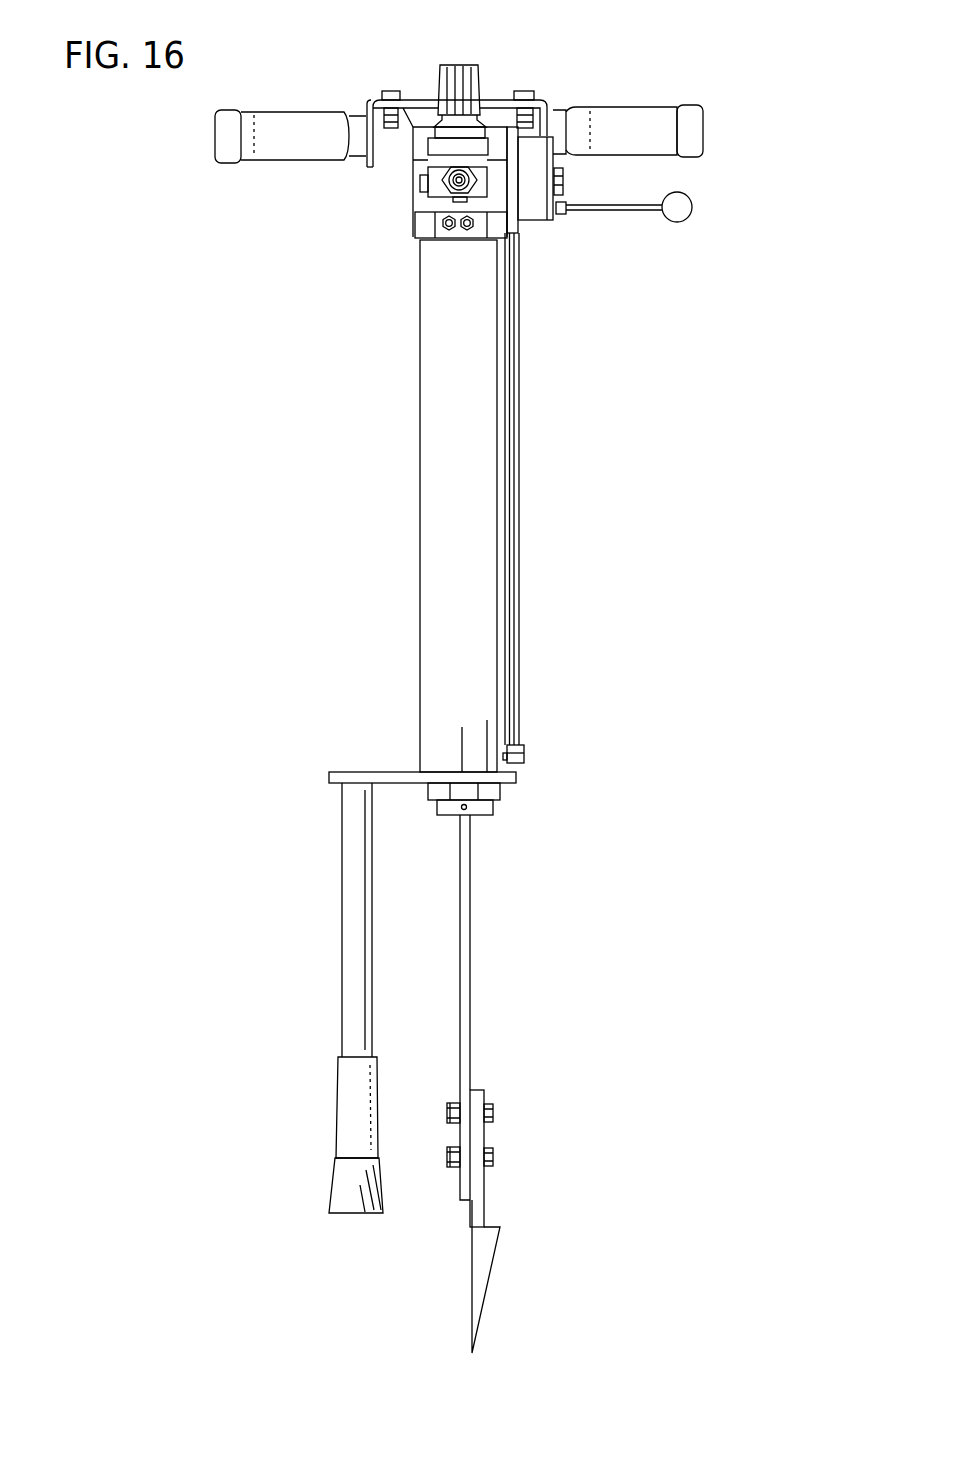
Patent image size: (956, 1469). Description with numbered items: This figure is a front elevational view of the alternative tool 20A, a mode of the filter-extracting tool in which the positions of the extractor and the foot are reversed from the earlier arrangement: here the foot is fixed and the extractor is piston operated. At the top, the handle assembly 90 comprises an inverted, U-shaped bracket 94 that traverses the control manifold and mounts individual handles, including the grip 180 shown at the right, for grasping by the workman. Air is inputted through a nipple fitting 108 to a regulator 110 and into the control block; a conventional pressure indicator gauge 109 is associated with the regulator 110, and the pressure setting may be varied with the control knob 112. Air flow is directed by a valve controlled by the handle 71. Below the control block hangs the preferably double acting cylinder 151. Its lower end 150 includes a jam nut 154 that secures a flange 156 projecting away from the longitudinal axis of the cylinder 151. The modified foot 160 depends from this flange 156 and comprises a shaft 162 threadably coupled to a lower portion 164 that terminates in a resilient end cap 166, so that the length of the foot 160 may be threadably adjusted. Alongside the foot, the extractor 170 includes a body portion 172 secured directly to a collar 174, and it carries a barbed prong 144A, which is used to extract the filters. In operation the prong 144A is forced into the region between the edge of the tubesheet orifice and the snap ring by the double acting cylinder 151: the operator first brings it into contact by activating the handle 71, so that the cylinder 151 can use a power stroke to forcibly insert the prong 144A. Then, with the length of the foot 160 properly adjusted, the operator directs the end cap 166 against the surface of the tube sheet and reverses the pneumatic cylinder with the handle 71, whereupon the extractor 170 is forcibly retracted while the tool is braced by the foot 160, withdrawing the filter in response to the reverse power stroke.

The alternative tool 20A is at (296, 406).
The handle assembly 90 is at (312, 92).
The U-shaped bracket 94 is at (428, 100).
The control knob 112 is at (463, 66).
The right handle 180 is at (620, 107).
The regulator 110 is at (413, 187).
The nipple fitting 108 is at (443, 183).
The handle 71 is at (636, 227).
The pressure indicator gauge 109 is at (538, 205).
The lower end 150 is at (368, 703).
The double acting cylinder 151 is at (432, 560).
The flange 156 is at (385, 772).
The jam nut 154 is at (492, 791).
The collar 174 is at (483, 805).
The modified foot 160 is at (315, 868).
The shaft 162 is at (362, 938).
The lower portion 164 is at (340, 1088).
The resilient end cap 166 is at (330, 1200).
The extractor 170 is at (515, 966).
The body portion 172 is at (472, 1005).
The barbed prong 144A is at (532, 1278).